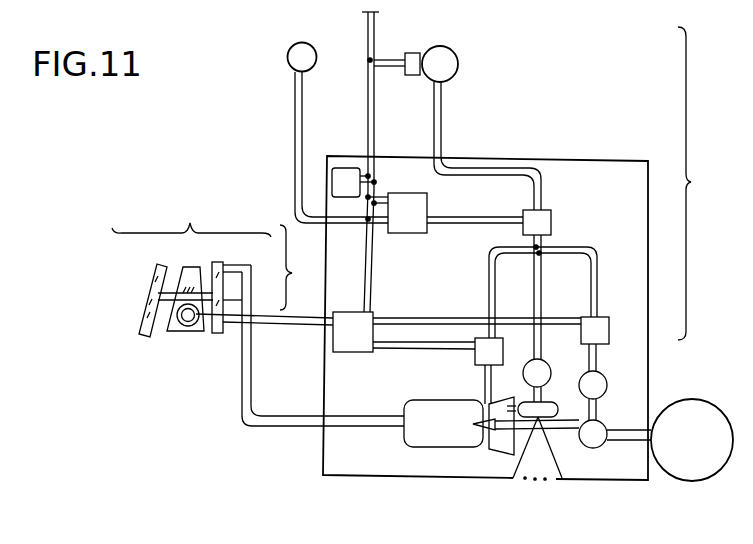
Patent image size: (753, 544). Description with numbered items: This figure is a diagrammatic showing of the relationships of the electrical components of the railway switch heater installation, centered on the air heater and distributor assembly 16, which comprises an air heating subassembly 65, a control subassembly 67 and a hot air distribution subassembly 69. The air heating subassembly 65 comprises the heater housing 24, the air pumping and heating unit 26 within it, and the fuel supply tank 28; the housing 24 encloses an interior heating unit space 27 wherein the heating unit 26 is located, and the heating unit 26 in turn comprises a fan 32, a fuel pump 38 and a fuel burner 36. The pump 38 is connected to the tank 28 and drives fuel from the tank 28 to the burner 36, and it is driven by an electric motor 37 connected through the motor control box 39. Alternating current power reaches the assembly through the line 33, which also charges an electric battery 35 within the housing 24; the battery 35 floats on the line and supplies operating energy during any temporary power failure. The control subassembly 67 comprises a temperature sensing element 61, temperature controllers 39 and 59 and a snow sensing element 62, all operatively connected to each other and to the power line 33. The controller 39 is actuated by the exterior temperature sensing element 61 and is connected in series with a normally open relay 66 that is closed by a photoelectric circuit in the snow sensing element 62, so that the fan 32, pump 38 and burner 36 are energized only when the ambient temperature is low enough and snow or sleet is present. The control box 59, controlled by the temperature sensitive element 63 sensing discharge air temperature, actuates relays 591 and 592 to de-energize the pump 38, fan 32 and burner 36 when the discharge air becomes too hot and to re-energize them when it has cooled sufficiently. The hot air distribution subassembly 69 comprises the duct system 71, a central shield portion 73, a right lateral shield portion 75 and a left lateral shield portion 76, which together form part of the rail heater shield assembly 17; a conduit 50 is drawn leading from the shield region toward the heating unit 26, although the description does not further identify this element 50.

The air heater and distributor assembly 16 is at (249, 458).
The rail heater shield assembly 17 is at (222, 265).
The heater housing 24 is at (322, 451).
The air pumping and heating unit 26 is at (412, 451).
The interior heating unit space 27 is at (589, 168).
The fuel supply tank 28 is at (713, 405).
The fan 32 is at (558, 398).
The line 33 is at (375, 27).
The electric battery 35 is at (348, 168).
The fuel burner 36 is at (489, 450).
The electric motor 37 is at (607, 385).
The fuel pump 38 is at (605, 425).
The temperature controller 39 is at (428, 205).
The conduit 50 is at (385, 415).
The control box 59 is at (357, 312).
The relay 591 is at (611, 311).
The relay 592 is at (480, 366).
The temperature sensing element 61 is at (316, 50).
The snow sensing element 62 is at (460, 62).
The temperature sensitive element 63 is at (178, 310).
The air heating subassembly 65 is at (446, 462).
The relay 66 is at (551, 230).
The control subassembly 67 is at (700, 183).
The hot air distribution subassembly 69 is at (299, 267).
The duct system 71 is at (253, 308).
The central shield portion 73 is at (194, 267).
The right lateral shield portion 75 is at (155, 275).
The left lateral shield portion 76 is at (218, 261).